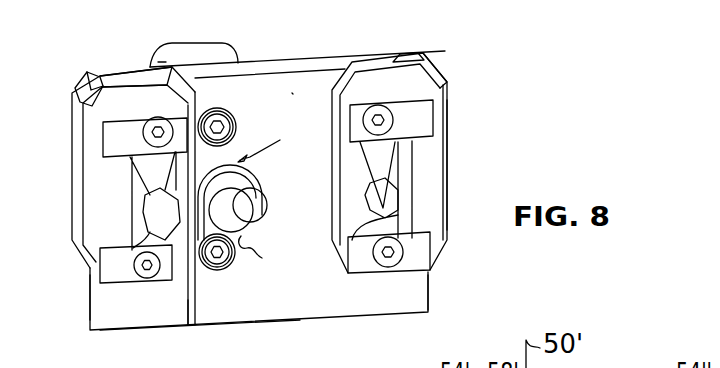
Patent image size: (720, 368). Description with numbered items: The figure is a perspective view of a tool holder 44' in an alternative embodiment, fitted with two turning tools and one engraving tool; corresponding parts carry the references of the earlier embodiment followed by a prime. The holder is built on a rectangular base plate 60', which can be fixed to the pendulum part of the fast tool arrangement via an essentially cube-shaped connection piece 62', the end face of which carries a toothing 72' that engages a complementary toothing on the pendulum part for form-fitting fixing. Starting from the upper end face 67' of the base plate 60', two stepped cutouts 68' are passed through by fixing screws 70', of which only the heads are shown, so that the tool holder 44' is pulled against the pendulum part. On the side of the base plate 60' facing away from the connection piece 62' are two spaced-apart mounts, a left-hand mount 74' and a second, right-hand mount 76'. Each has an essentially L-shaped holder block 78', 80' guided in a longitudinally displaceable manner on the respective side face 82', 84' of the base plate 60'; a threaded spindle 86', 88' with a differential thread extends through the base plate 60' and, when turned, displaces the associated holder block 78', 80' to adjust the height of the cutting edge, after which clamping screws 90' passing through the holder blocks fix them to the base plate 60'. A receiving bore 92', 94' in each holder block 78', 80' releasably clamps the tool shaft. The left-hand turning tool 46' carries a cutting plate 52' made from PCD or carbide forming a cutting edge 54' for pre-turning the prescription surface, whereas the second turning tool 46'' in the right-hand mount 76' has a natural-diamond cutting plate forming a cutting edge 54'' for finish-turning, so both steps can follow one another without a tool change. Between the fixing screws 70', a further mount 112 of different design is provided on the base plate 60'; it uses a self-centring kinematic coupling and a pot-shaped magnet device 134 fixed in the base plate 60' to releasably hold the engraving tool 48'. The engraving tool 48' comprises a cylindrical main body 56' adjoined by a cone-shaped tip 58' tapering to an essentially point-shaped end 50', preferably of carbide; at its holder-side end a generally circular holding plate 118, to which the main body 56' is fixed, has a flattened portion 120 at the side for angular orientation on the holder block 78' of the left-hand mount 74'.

The tool holder 44' is at (488, 165).
The turning tool 46' is at (135, 201).
The second turning tool 46'' is at (406, 189).
The engraving tool 48' is at (257, 214).
The point-shaped end 50' is at (271, 253).
The cutting plate 52' is at (243, 213).
The cutting edge 54' is at (136, 264).
The cutting edge 54'' is at (368, 262).
The main body 56' is at (248, 195).
The tip 58' is at (270, 202).
The base plate 60' is at (267, 174).
The connection piece 62' is at (194, 35).
The end face 67' is at (200, 343).
The stepped cutout 68' is at (235, 196).
The fixing screw 70' is at (229, 211).
The toothing 72' is at (133, 56).
The mount 74' is at (71, 63).
The second mount 76' is at (459, 67).
The holder block 78' is at (133, 167).
The holder block 80' is at (389, 163).
The side face 82' is at (63, 297).
The side face 84' is at (461, 291).
The threaded spindle 86' is at (66, 92).
The threaded spindle 88' is at (414, 38).
The clamping screw 90' is at (281, 196).
The receiving bore 92' is at (145, 145).
The receiving bore 94' is at (386, 145).
The further mount 112 is at (160, 62).
The holding plate 118 is at (275, 141).
The flattened portion 120 is at (191, 330).
The pot-shaped magnet device 134 is at (304, 105).